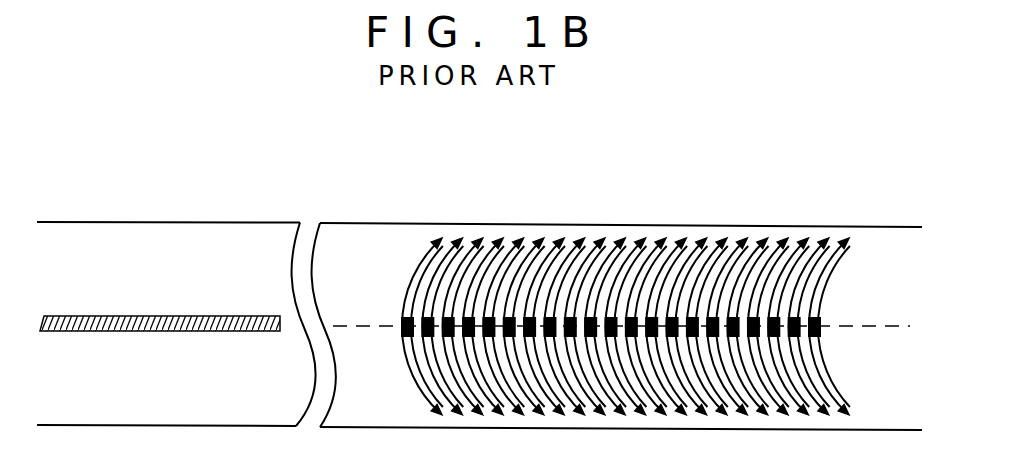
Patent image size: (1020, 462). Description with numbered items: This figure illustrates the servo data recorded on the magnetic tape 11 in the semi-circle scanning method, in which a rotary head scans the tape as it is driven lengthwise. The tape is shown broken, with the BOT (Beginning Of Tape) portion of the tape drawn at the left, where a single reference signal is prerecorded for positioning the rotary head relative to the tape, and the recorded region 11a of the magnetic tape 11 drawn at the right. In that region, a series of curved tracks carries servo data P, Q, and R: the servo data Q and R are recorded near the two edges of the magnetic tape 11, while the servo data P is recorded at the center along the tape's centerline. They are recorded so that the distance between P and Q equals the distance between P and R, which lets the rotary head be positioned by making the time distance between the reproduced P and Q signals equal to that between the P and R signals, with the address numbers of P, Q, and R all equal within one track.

The magnetic tape 11 is at (741, 226).
The magnetization pattern / recorded bits 11a is at (406, 262).
The servo data Q is at (851, 246).
The servo data P is at (823, 326).
The servo data R is at (851, 410).
The BOT (Beginning Of Tape) BOT is at (160, 256).